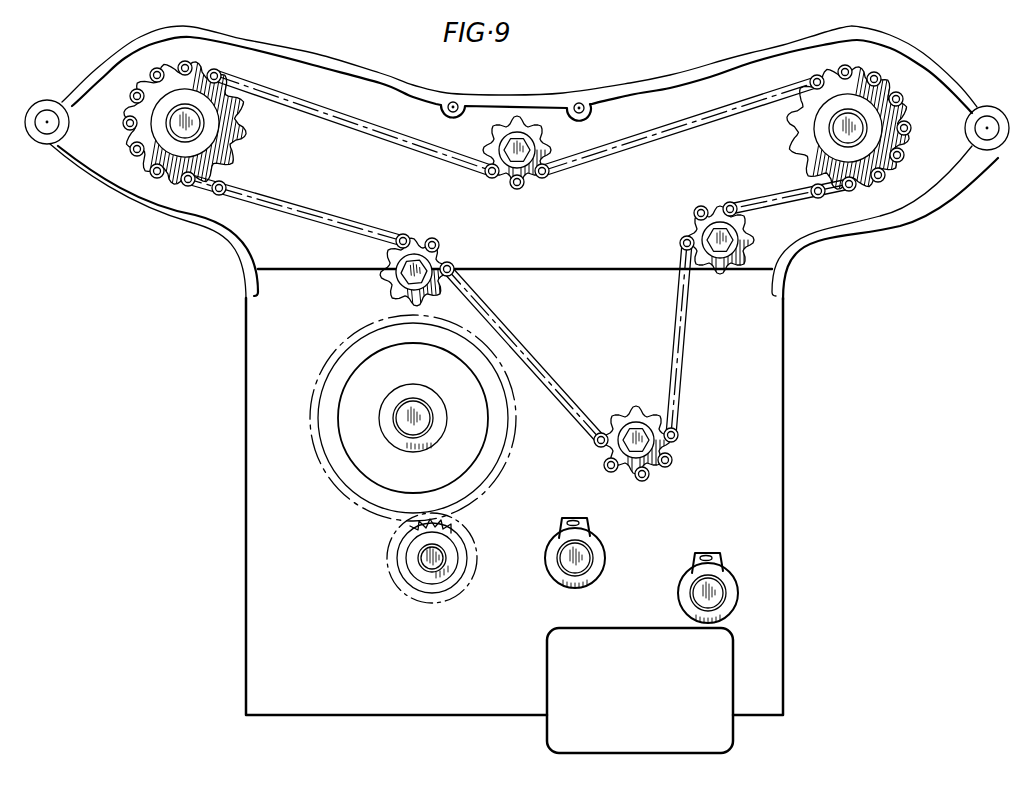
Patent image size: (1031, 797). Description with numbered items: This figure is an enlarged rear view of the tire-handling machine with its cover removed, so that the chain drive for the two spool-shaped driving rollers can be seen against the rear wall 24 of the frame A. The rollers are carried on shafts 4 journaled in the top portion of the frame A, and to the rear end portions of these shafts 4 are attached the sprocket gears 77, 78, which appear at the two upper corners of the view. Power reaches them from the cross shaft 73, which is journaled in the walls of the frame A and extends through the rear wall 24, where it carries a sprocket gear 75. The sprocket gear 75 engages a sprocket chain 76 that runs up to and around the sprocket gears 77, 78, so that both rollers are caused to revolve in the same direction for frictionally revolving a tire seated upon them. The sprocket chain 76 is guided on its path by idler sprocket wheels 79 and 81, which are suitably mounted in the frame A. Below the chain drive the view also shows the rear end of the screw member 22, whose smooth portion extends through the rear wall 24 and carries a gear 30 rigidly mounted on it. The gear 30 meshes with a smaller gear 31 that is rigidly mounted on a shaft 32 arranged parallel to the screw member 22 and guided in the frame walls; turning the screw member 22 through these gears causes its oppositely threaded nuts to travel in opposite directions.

The frame A is at (254, 541).
The shafts of the rollers 4 is at (172, 130).
The screw member 22 is at (420, 410).
The rear wall 24 is at (715, 571).
The gear 30 is at (516, 444).
The smaller gear 31 is at (456, 530).
The shaft 32 is at (428, 556).
The cross shaft 73 is at (672, 448).
The sprocket gear 75 is at (636, 418).
The sprocket chain 76 is at (663, 470).
The sprocket gear 77 is at (244, 134).
The sprocket gear 78 is at (802, 152).
The idler sprocket wheel 79 is at (748, 228).
The idler sprocket wheel 81 is at (541, 134).